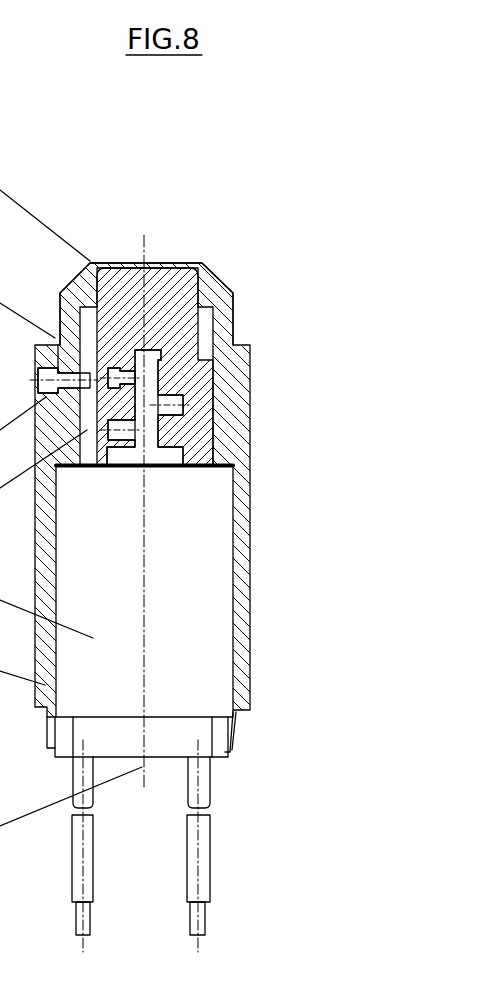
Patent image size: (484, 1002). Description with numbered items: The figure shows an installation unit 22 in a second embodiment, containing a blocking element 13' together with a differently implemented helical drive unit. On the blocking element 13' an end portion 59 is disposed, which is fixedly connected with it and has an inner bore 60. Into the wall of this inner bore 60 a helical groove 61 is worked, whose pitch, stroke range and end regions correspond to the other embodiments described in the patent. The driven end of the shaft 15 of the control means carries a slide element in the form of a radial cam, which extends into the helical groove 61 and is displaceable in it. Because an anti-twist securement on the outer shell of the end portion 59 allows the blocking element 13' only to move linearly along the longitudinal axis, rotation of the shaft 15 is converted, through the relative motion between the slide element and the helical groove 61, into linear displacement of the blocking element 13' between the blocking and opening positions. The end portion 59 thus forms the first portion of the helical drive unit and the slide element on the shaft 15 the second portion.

The blocking element 13' is at (217, 264).
The inner bore 60 is at (118, 372).
The end portion 59 is at (195, 380).
The helical groove 61 is at (183, 404).
The shaft 15 is at (143, 422).
The installation unit 22 is at (281, 581).